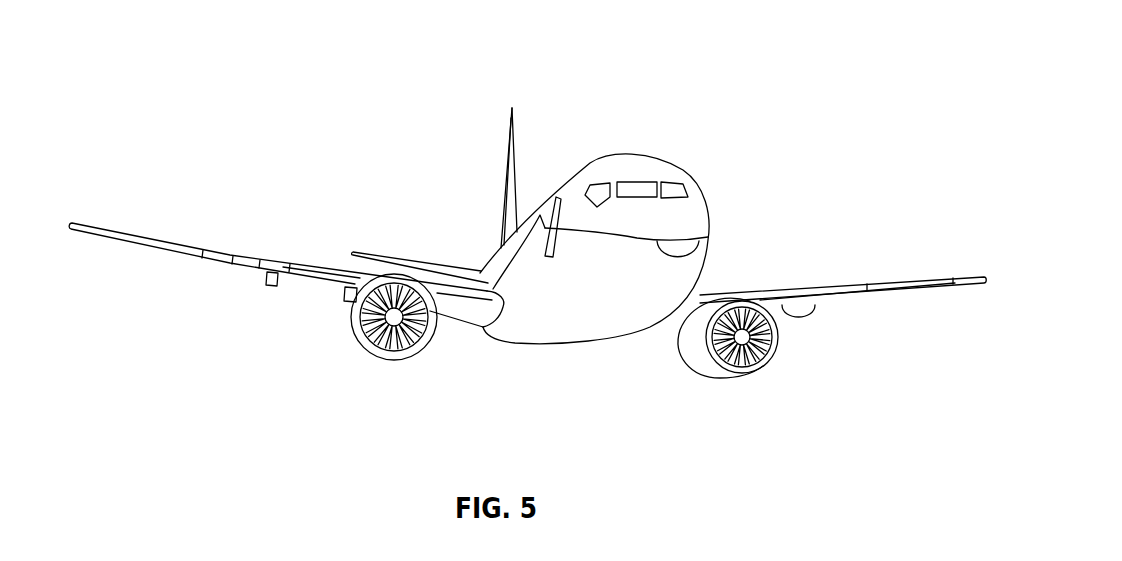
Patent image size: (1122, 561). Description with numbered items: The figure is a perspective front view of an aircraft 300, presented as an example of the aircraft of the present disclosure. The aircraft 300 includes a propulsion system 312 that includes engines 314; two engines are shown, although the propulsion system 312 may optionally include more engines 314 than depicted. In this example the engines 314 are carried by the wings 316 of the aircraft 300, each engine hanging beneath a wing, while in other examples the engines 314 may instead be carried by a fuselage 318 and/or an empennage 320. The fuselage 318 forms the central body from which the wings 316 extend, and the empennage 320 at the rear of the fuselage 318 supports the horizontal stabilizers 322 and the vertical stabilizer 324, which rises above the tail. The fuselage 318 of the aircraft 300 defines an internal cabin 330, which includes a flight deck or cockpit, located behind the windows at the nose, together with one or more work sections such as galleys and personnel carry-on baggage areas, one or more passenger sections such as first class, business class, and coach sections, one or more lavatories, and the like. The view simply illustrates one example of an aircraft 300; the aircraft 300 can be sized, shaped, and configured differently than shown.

The aircraft 300 is at (297, 106).
The propulsion system 312 is at (329, 341).
The engines 314 is at (390, 358).
The wings 316 is at (193, 246).
The fuselage 318 is at (707, 211).
The empennage 320 is at (502, 236).
The horizontal stabilizers 322 is at (386, 255).
The vertical stabilizer 324 is at (508, 150).
The internal cabin 330 is at (637, 186).